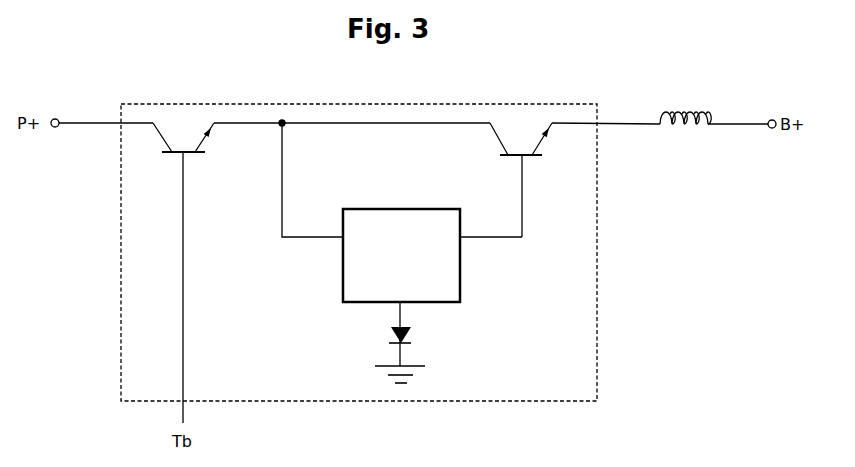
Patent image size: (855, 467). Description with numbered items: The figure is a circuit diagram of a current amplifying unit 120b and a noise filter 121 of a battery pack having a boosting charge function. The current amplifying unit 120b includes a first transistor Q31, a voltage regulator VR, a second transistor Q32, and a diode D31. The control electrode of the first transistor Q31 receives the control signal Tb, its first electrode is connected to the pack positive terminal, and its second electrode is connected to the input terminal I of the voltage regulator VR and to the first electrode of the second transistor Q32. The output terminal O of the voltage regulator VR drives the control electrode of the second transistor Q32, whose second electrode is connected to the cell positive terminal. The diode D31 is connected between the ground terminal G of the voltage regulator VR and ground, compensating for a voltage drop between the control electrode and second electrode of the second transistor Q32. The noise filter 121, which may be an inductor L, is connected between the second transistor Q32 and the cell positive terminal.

The current amplifying unit 120b is at (358, 103).
The noise filter 121 is at (689, 146).
The first transistor Q31 is at (196, 273).
The second transistor Q32 is at (534, 180).
The voltage regulator VR is at (400, 209).
The diode D31 is at (421, 334).